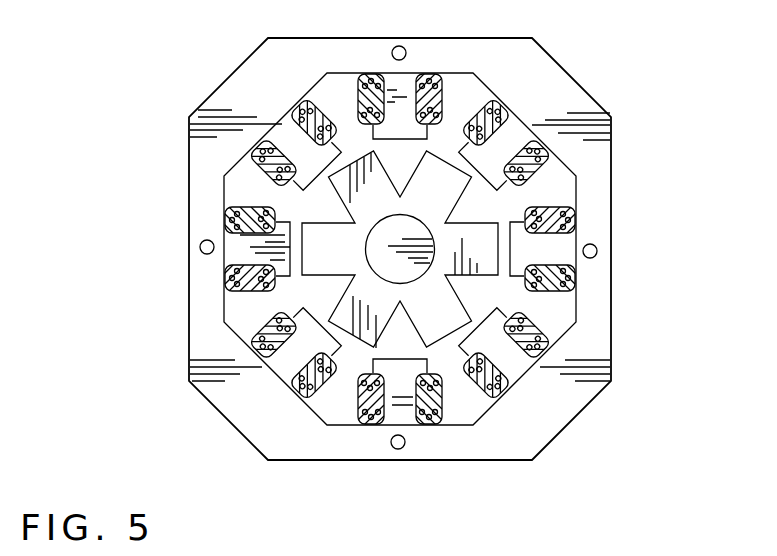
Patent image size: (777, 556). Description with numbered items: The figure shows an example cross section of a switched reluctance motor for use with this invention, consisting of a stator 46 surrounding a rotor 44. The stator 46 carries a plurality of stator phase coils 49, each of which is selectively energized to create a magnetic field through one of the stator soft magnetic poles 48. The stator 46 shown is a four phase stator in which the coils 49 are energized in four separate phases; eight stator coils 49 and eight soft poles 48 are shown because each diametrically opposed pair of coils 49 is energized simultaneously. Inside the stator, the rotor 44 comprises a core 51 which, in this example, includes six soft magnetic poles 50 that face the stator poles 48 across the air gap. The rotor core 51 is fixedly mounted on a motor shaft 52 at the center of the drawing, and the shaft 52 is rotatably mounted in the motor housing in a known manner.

The rotor 44 is at (463, 323).
The stator 46 is at (612, 161).
The stator soft magnetic pole 48 is at (302, 150).
The stator phase coil 49 is at (358, 98).
The soft magnetic pole 50 is at (347, 201).
The core 51 is at (345, 277).
The motor shaft 52 is at (393, 226).